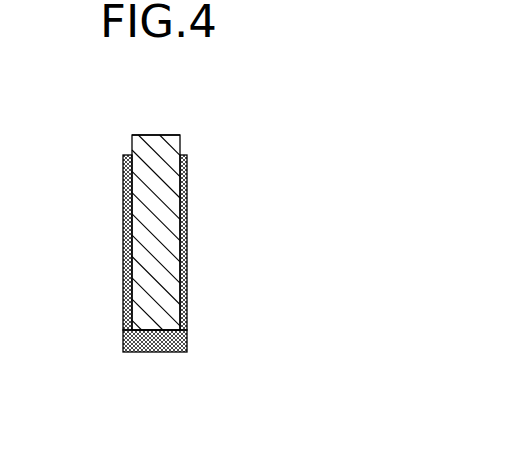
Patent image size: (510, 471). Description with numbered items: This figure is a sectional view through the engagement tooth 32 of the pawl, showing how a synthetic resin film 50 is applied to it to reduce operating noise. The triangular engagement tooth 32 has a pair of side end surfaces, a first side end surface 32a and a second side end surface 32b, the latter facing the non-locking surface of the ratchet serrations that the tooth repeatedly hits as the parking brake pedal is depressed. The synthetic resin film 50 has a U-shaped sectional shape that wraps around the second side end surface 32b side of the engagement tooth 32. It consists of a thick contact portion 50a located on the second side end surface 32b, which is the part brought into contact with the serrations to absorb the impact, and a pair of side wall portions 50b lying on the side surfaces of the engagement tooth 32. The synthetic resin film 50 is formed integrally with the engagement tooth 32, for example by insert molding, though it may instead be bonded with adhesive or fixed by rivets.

The engagement tooth 32 is at (155, 212).
The first side end surface 32a is at (160, 135).
The second side end surface 32b is at (178, 342).
The synthetic resin film 50 is at (154, 290).
The contact portion 50a is at (157, 350).
The side wall portions 50b is at (126, 246).